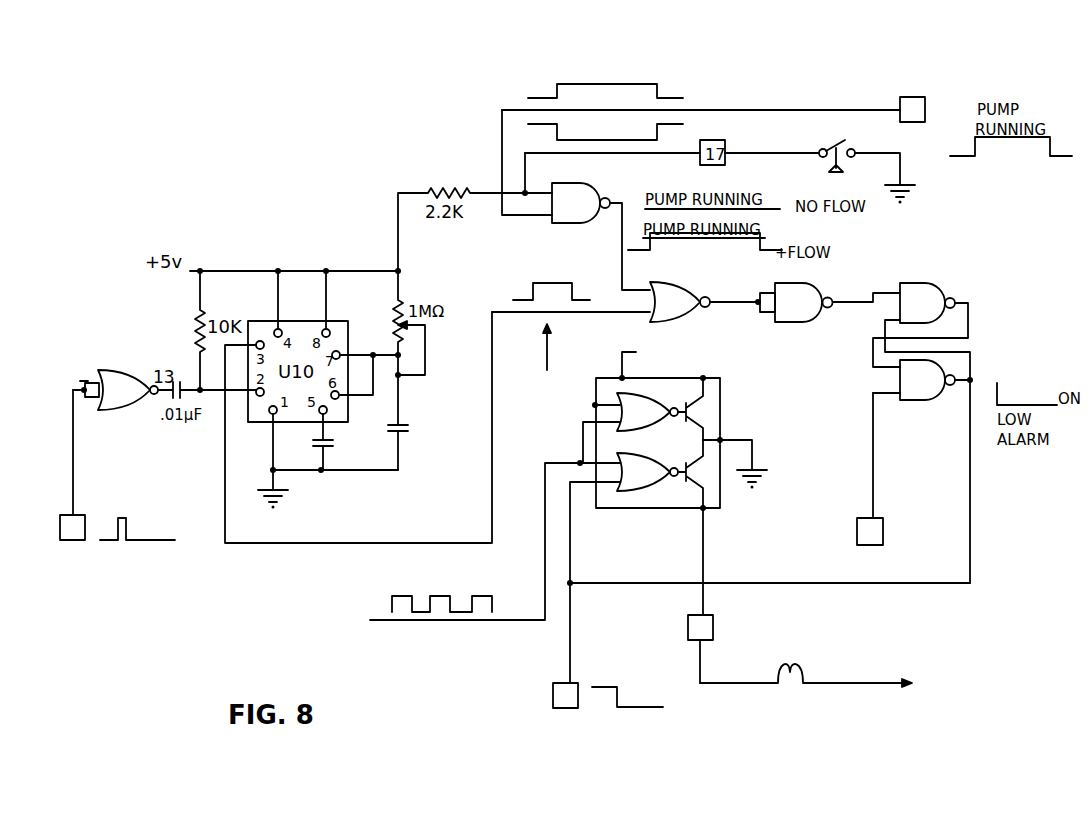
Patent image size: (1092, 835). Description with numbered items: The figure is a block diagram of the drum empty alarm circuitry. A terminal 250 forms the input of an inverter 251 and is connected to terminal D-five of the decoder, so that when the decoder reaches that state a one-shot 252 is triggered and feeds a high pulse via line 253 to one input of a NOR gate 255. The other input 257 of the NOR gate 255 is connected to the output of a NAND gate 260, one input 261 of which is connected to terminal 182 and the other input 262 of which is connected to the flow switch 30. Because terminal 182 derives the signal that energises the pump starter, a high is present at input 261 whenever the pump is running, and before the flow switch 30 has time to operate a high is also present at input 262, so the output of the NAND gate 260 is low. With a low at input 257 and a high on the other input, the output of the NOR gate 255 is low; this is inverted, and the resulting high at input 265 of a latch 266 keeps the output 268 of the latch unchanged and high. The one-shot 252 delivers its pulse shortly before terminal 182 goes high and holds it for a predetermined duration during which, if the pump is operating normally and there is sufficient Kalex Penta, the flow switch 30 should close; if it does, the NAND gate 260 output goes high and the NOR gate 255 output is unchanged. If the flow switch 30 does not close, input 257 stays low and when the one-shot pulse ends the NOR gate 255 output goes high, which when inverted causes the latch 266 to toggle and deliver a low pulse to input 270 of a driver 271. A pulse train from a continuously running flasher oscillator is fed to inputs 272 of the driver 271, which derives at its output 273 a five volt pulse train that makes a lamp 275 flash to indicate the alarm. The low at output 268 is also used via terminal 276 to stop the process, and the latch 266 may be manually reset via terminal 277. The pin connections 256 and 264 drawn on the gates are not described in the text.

The terminal 182 is at (925, 108).
The flow switch 30 is at (835, 148).
The inverter 251 is at (128, 370).
The terminal 250 is at (74, 540).
The one-shot 252 is at (271, 415).
The line 253 is at (225, 495).
The NAND gate 260 is at (590, 193).
The input 261 is at (546, 222).
The input 262 is at (545, 196).
The input 257 is at (648, 284).
The NOR gate 255 is at (697, 277).
The NOR gate input lead pin 2 256 is at (650, 318).
The NAND gate U6 264 is at (795, 322).
The input 265 is at (873, 293).
The latch 266 is at (978, 312).
The output 268 is at (969, 432).
The driver 271 is at (722, 379).
The inputs 272 is at (591, 422).
The input 270 is at (596, 483).
The output 273 is at (705, 519).
The terminal 277 is at (884, 536).
The lamp 275 is at (805, 690).
The terminal 276 is at (553, 696).